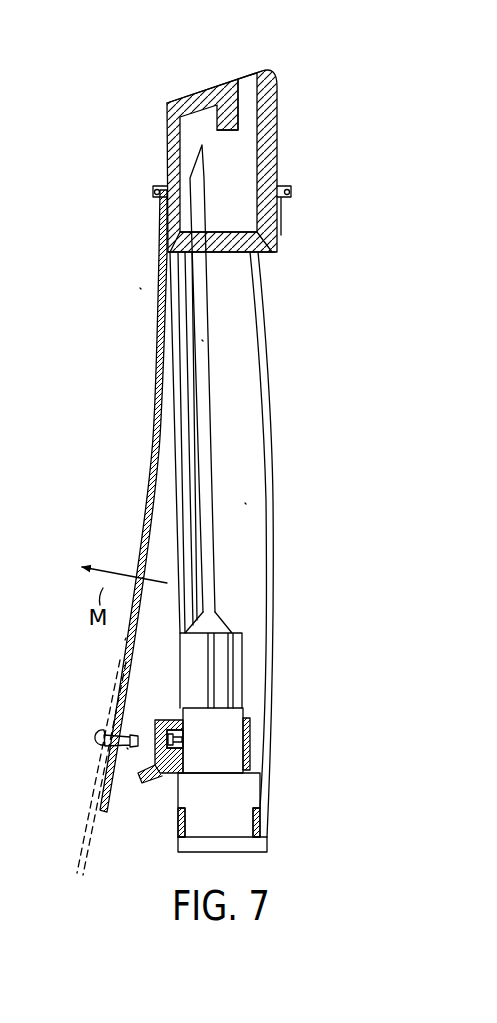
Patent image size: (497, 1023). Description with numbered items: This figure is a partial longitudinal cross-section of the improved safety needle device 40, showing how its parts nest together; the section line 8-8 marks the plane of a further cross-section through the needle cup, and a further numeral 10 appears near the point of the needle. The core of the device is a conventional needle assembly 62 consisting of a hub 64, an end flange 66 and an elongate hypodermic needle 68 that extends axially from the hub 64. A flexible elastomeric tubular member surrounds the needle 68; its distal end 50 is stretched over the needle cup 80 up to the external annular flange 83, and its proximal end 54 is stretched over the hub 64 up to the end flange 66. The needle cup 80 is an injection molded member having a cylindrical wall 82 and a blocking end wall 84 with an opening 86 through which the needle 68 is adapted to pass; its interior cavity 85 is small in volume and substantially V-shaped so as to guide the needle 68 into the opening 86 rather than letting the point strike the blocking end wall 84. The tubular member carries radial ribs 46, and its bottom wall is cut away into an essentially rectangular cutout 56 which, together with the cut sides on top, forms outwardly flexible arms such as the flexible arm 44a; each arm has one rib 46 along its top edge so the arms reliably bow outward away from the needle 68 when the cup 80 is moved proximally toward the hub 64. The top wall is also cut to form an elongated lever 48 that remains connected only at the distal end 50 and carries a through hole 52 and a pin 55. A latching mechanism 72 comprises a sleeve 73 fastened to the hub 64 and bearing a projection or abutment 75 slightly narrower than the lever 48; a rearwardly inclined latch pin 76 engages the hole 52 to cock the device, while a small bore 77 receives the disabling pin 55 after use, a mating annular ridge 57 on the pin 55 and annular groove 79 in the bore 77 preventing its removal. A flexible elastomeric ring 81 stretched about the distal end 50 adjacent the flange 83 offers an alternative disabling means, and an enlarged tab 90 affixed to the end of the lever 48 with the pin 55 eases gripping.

The section line 8- 8 is at (343, 176).
The needle 10 is at (206, 165).
The safety needle device 40 is at (140, 288).
The flexible arm 44a is at (245, 503).
The radial rib 46 is at (177, 440).
The lever 48 is at (125, 638).
The distal end 50 is at (160, 215).
The through hole 52 is at (140, 525).
The proximal end 54 is at (263, 820).
The disabling pin 55 is at (96, 727).
The cutout 56 is at (272, 393).
The annular ridge 57 is at (127, 750).
The needle assembly 62 is at (227, 613).
The hub 64 is at (238, 715).
The end flange 66 is at (262, 845).
The hypodermic needle 68 is at (202, 340).
The latching mechanism 72 is at (145, 700).
The sleeve 73 is at (252, 747).
The abutment 75 is at (182, 770).
The latch pin 76 is at (147, 782).
The bore 77 is at (180, 740).
The annular groove 79 is at (183, 745).
The needle cup 80 is at (288, 73).
The flexible elastomeric ring 81 is at (155, 192).
The cylindrical wall 82 is at (277, 100).
The external annular flange 83 is at (290, 195).
The blocking end wall 84 is at (200, 88).
The interior cavity 85 is at (240, 218).
The opening 86 is at (247, 82).
The enlarged tab 90 is at (93, 843).